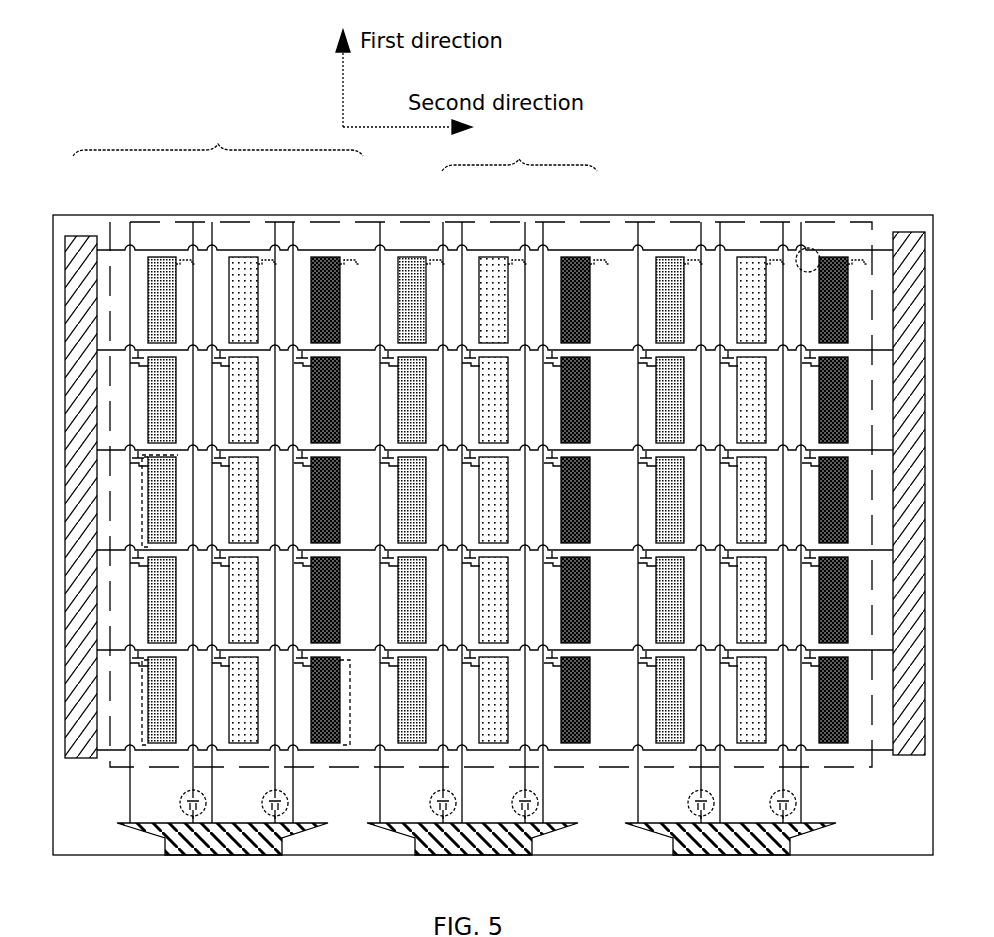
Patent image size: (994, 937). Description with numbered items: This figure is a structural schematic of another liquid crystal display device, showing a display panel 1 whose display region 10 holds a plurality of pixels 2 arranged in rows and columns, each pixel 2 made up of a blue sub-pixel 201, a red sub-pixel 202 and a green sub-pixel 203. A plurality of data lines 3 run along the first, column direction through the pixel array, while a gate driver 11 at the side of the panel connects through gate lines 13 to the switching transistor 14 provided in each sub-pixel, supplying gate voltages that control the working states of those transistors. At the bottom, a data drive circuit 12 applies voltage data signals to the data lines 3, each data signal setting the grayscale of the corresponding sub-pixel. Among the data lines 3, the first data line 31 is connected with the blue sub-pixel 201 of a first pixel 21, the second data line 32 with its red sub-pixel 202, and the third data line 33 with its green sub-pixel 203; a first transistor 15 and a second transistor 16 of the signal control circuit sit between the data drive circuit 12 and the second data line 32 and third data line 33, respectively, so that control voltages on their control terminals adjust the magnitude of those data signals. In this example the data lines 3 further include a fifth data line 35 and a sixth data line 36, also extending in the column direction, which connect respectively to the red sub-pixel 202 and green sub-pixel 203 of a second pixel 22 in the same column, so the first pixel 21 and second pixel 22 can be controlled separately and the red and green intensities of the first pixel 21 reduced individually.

The display panel 1 is at (916, 214).
The pixel 2 is at (519, 153).
The blue sub-pixel 201 is at (566, 257).
The red sub-pixel 202 is at (486, 257).
The green sub-pixel 203 is at (405, 257).
The data lines 3 is at (218, 138).
The first data line 31 is at (293, 238).
The second data line 32 is at (276, 238).
The third data line 33 is at (195, 242).
The fifth data line 35 is at (213, 240).
The sixth data line 36 is at (130, 244).
The display region 10 is at (600, 767).
The gate driver 11 is at (920, 753).
The data drive circuit 12 is at (710, 838).
The gate line 13 is at (760, 250).
The switching transistor 14 is at (810, 250).
The first transistor 15 is at (287, 810).
The second transistor 16 is at (205, 818).
The first pixel 21 is at (142, 705).
The second pixel 22 is at (142, 502).